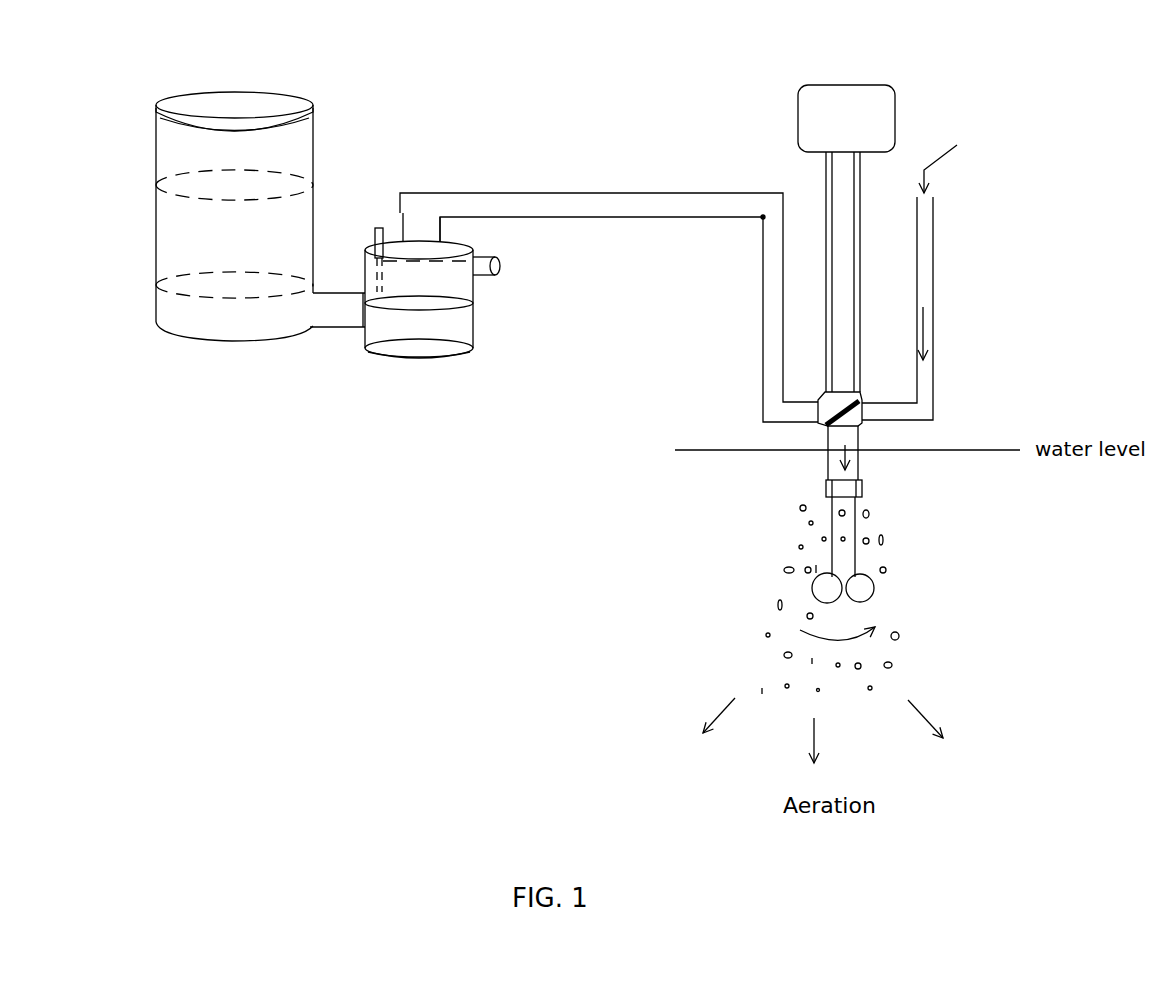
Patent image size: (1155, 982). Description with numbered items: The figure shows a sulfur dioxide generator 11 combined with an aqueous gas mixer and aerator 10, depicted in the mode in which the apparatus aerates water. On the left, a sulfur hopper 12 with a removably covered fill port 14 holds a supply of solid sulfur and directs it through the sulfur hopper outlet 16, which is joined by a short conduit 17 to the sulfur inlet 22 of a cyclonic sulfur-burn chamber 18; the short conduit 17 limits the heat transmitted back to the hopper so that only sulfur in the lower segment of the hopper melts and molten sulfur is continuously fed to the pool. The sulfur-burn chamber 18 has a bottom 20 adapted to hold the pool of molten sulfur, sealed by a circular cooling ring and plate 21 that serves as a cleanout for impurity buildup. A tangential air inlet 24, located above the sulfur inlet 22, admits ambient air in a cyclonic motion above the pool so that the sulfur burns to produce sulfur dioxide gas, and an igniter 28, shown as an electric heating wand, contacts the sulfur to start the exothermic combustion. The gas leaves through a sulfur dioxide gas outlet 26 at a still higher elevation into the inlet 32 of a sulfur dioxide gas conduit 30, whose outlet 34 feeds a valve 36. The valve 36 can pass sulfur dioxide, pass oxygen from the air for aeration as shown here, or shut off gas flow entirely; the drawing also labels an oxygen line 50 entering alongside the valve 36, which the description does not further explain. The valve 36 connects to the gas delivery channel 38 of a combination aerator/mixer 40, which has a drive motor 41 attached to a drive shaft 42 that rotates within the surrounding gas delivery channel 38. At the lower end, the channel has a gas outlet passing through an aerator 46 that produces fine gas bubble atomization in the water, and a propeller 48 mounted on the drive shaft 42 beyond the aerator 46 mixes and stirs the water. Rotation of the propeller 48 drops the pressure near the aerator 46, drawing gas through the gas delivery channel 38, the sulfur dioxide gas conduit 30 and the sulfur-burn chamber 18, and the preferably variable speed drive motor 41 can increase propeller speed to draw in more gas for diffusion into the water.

The aqueous gas mixer and aerator 10 is at (468, 558).
The sulfur dioxide generator 11 is at (305, 403).
The sulfur hopper 12 is at (298, 220).
The removably covered fill port 14 is at (272, 110).
The sulfur hopper outlet 16 is at (308, 310).
The short conduit 17 is at (337, 312).
The cyclonic sulfur-burn chamber 18 is at (448, 283).
The bottom 20 is at (467, 337).
The circular cooling ring and plate 21 is at (433, 353).
The sulfur inlet 22 is at (367, 317).
The tangential air inlet 24 is at (503, 263).
The sulfur dioxide gas outlet 26 is at (420, 230).
The igniter 28 is at (382, 223).
The sulfur dioxide gas conduit 30 is at (565, 205).
The inlet 32 is at (443, 207).
The outlet 34 is at (812, 412).
The valve 36 is at (853, 417).
The gas delivery channel 38 is at (858, 275).
The combination aerator/mixer 40 is at (765, 110).
The drive motor 41 is at (852, 93).
The drive shaft 42 is at (843, 185).
The aerator 46 is at (857, 498).
The propeller 48 is at (863, 593).
The oxygen supply tube 50 is at (925, 230).